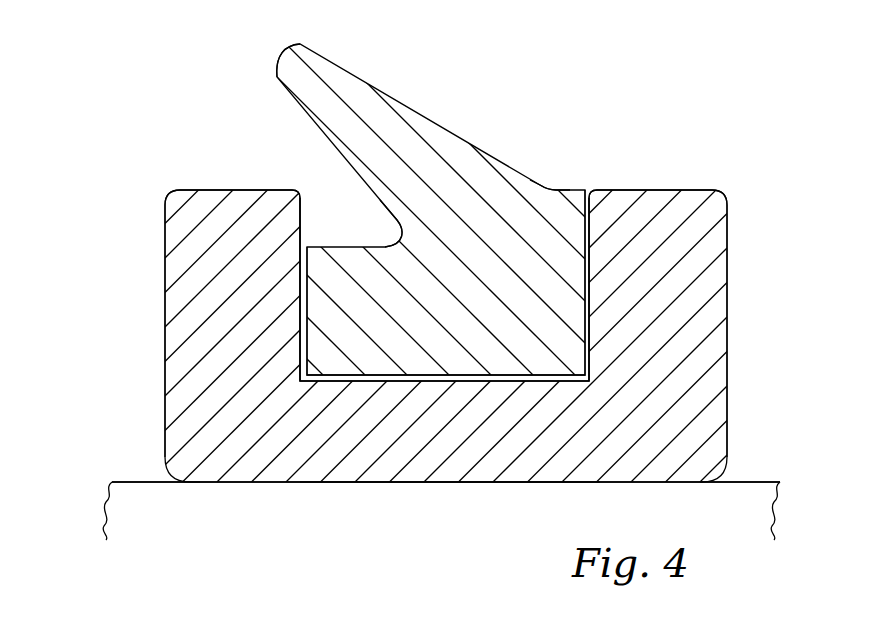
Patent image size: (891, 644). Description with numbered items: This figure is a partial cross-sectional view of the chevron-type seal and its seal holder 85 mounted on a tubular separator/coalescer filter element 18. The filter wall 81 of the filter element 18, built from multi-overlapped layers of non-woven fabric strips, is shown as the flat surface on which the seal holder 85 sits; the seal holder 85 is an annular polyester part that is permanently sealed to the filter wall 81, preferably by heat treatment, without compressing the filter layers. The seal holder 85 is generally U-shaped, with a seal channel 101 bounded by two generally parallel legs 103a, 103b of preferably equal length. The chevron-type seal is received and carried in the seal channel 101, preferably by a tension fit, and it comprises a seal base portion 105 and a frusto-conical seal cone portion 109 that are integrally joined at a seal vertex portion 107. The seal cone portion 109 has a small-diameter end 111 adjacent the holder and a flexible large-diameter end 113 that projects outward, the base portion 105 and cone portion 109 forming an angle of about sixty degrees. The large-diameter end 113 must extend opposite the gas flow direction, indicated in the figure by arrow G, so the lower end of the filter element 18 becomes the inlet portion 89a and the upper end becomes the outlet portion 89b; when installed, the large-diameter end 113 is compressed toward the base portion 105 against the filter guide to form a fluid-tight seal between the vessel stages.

The separator/coalescer filter element 18 is at (778, 483).
The filter wall 81 is at (423, 484).
The seal holder 85 is at (663, 187).
The inlet portion 89a is at (131, 478).
The outlet portion 89b is at (752, 480).
The seal channel 101 is at (469, 377).
The leg 103a is at (165, 352).
The leg 103b is at (727, 242).
The seal base portion 105 is at (356, 244).
The seal vertex portion 107 is at (590, 307).
The seal cone portion 109 is at (447, 124).
The small-diameter end 111 is at (547, 188).
The large-diameter end 113 is at (278, 66).
The direction of pivot G is at (197, 113).